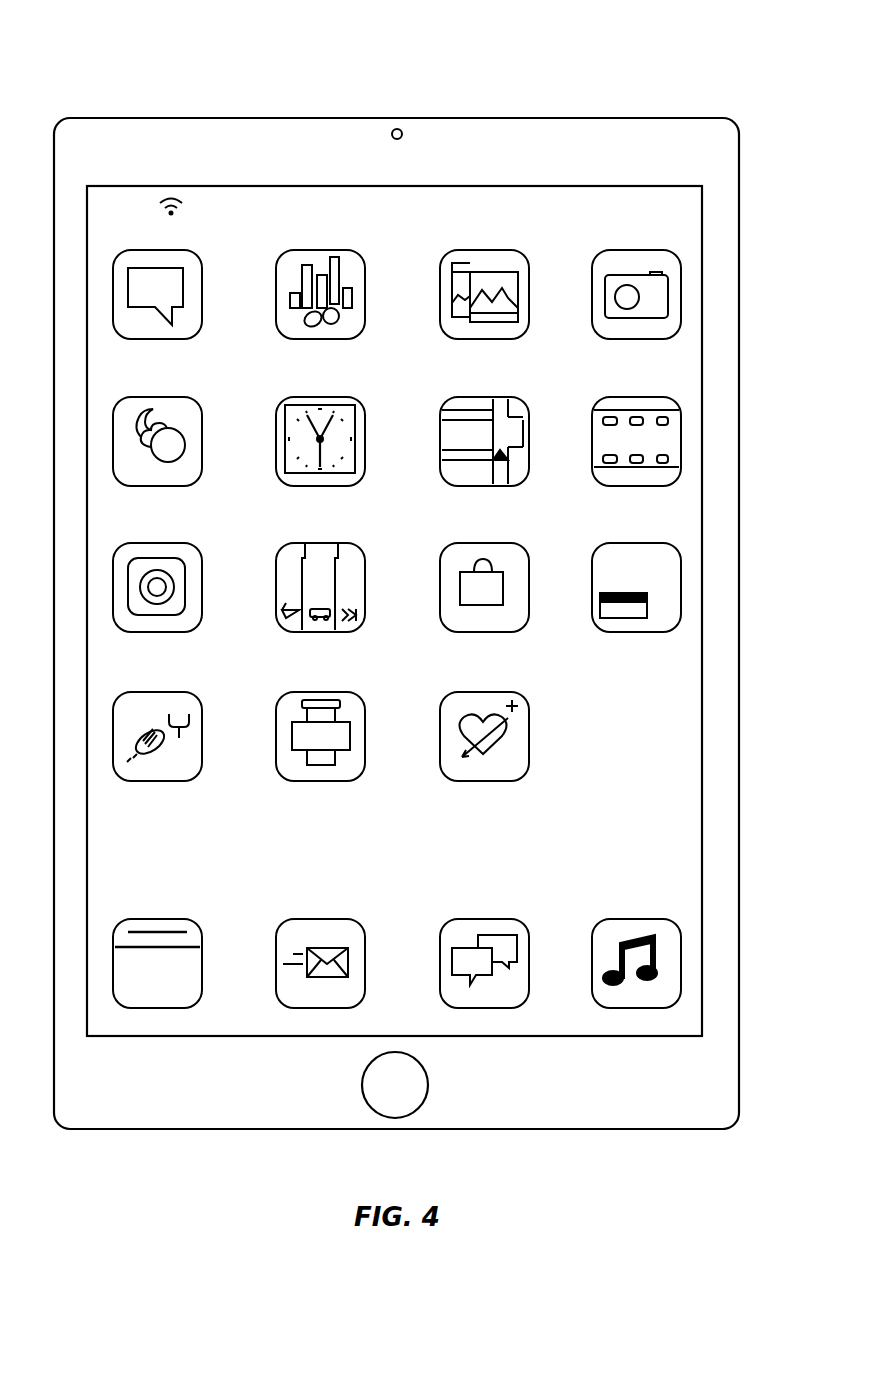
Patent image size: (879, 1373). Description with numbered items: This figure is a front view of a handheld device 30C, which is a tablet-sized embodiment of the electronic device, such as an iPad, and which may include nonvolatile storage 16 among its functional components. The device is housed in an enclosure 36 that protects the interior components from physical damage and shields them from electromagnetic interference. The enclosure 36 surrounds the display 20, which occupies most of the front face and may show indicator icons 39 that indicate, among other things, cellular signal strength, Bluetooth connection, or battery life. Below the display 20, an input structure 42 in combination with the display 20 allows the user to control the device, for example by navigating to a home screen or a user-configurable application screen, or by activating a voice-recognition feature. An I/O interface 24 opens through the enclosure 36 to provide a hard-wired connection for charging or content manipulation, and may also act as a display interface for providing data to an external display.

The handheld device 30C is at (66, 68).
The nonvolatile storage 16 is at (116, 117).
The enclosure 36 is at (657, 117).
The display 20 is at (704, 692).
The indicator icons 39 is at (402, 257).
The input structures 42 is at (428, 1085).
The I/O interface 24 is at (397, 1130).